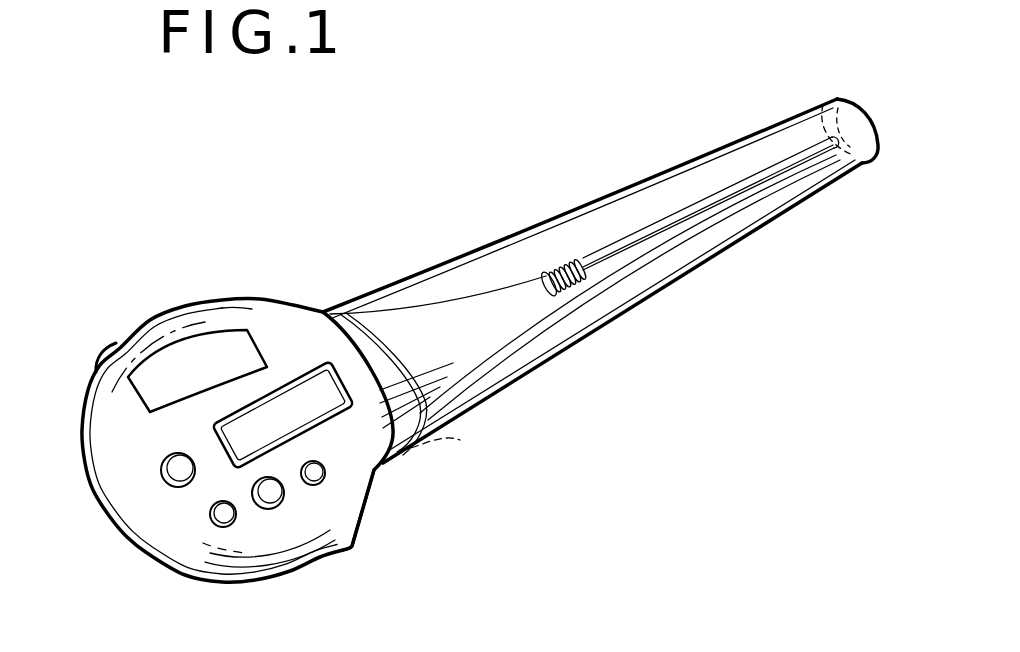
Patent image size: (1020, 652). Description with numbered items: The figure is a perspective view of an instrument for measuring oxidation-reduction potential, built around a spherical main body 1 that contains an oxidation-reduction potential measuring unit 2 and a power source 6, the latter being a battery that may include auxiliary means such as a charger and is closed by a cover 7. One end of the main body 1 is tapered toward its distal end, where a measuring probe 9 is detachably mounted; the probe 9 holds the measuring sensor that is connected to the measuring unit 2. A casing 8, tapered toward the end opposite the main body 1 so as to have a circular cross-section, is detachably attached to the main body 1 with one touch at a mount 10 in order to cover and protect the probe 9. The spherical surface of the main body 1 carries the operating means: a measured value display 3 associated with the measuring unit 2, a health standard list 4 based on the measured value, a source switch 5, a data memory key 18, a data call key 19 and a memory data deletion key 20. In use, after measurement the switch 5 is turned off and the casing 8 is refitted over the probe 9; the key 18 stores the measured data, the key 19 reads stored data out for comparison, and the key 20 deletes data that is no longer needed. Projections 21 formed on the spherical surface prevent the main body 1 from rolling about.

The main body 1 is at (162, 333).
The oxidation-reduction potential measuring unit 2 is at (202, 533).
The measured value display 3 is at (325, 378).
The health standard list 4 is at (222, 353).
The source switch 5 is at (180, 478).
The power source 6 is at (138, 490).
The cover 7 is at (108, 512).
The casing 8 is at (640, 190).
The measuring probe 9 is at (578, 286).
The mount 10 is at (441, 461).
The data memory key 18 is at (223, 525).
The data call key 19 is at (275, 500).
The memory data deletion key 20 is at (326, 477).
The projections 21 is at (106, 348).